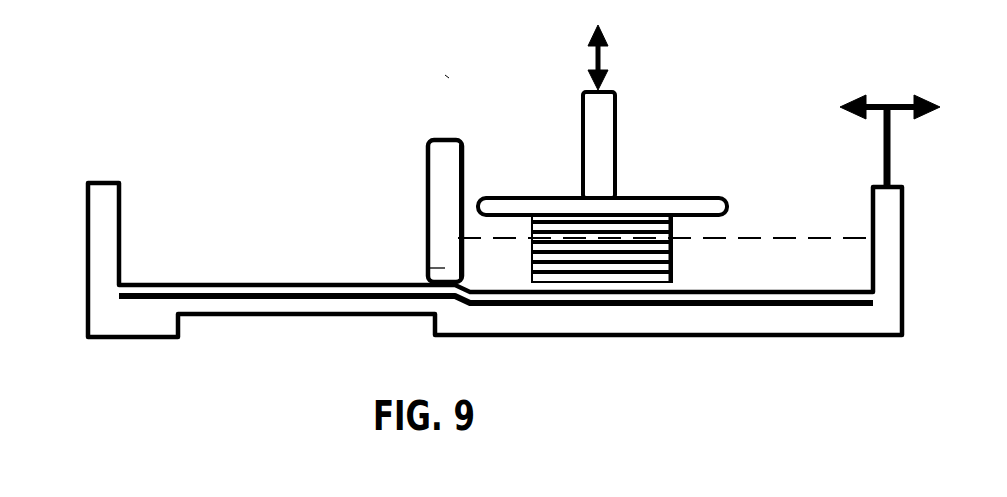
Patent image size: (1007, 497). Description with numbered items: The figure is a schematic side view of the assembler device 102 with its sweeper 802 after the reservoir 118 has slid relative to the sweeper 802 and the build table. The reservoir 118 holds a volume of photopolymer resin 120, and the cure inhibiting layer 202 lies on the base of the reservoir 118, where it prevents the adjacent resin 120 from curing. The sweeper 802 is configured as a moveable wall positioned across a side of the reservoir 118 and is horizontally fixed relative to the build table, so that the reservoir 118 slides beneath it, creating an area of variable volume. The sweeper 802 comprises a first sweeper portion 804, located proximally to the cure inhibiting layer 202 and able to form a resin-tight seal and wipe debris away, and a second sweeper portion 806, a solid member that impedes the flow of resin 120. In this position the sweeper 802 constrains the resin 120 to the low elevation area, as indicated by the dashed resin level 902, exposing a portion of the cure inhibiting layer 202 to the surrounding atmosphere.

The assembler device 102 is at (447, 77).
The reservoir 118 is at (885, 212).
The resin 120 is at (798, 278).
The cure inhibiting layer 202 is at (272, 285).
The sweeper 802 is at (466, 214).
The first sweeper portion 804 is at (438, 268).
The second sweeper portion 806 is at (432, 158).
The resin level 902 is at (757, 224).